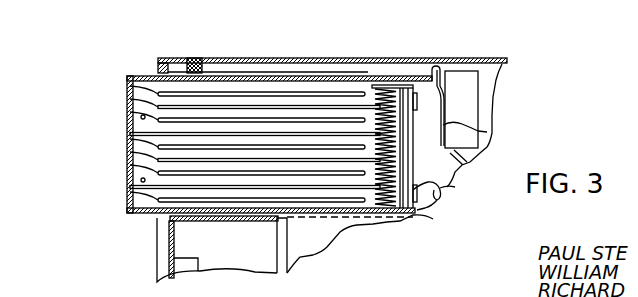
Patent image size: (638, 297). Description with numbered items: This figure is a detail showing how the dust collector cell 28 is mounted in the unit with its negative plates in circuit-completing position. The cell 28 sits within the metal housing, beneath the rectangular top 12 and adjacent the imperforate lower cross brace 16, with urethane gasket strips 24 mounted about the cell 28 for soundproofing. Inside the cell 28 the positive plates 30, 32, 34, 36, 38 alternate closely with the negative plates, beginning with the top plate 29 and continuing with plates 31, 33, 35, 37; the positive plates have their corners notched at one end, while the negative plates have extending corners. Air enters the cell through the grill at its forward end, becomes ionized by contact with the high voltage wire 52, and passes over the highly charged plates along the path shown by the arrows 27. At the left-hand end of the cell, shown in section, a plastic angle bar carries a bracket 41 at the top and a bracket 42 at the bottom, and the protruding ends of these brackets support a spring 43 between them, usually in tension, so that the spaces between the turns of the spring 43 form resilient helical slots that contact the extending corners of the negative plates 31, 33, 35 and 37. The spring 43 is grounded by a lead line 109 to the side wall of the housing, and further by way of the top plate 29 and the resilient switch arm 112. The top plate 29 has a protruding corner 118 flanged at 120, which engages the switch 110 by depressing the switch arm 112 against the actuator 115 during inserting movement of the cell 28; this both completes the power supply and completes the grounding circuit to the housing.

The rectangular top 12 is at (395, 57).
The imperforate lower cross brace 16 is at (138, 75).
The urethane gasket strips 24 is at (198, 58).
The arrows 27 is at (78, 109).
The dust collector cell 28 is at (145, 223).
The top plate 29 is at (418, 57).
The positive plate 30 is at (160, 73).
The negative plate 31 is at (129, 86).
The positive plate 32 is at (130, 98).
The negative plate 33 is at (130, 133).
The positive plate 34 is at (130, 147).
The negative plate 35 is at (128, 158).
The positive plate 36 is at (129, 167).
The negative plate 37 is at (128, 178).
The positive plate 38 is at (130, 197).
The bracket 41 is at (381, 84).
The bracket 42 is at (421, 213).
The spring 43 is at (382, 198).
The high voltage wire 52 is at (141, 117).
The lead line 109 is at (445, 198).
The switch 110 is at (478, 100).
The switch arm 112 is at (441, 90).
The actuator 115 is at (487, 132).
The protruding corner 118 is at (426, 78).
The flange 120 is at (434, 66).